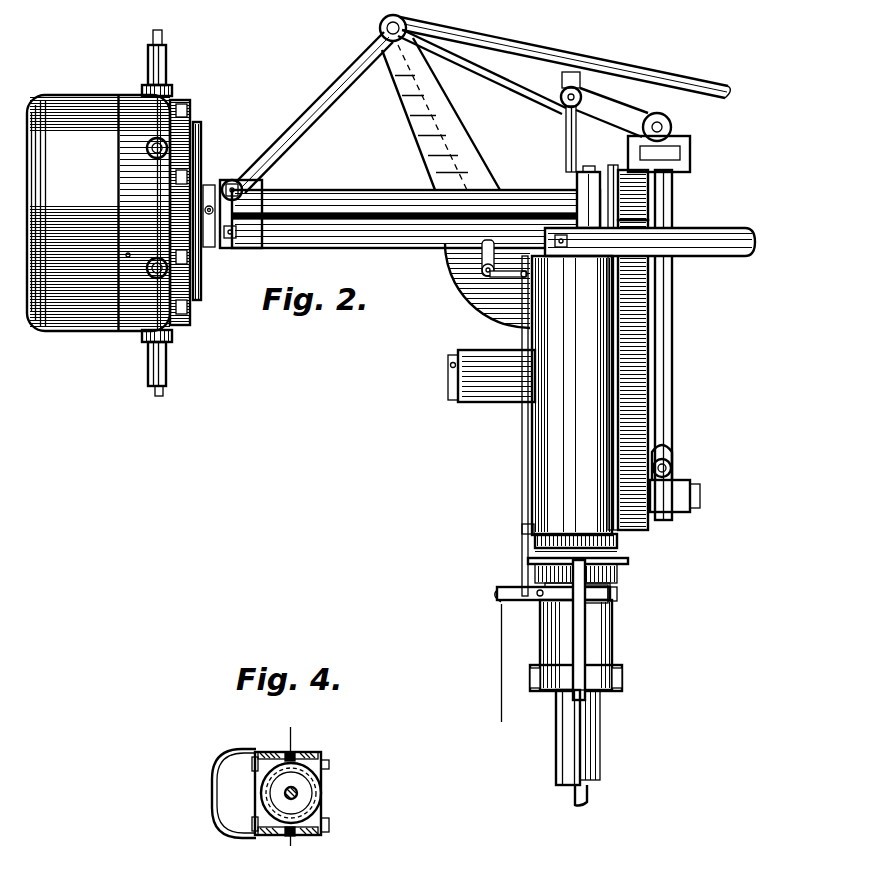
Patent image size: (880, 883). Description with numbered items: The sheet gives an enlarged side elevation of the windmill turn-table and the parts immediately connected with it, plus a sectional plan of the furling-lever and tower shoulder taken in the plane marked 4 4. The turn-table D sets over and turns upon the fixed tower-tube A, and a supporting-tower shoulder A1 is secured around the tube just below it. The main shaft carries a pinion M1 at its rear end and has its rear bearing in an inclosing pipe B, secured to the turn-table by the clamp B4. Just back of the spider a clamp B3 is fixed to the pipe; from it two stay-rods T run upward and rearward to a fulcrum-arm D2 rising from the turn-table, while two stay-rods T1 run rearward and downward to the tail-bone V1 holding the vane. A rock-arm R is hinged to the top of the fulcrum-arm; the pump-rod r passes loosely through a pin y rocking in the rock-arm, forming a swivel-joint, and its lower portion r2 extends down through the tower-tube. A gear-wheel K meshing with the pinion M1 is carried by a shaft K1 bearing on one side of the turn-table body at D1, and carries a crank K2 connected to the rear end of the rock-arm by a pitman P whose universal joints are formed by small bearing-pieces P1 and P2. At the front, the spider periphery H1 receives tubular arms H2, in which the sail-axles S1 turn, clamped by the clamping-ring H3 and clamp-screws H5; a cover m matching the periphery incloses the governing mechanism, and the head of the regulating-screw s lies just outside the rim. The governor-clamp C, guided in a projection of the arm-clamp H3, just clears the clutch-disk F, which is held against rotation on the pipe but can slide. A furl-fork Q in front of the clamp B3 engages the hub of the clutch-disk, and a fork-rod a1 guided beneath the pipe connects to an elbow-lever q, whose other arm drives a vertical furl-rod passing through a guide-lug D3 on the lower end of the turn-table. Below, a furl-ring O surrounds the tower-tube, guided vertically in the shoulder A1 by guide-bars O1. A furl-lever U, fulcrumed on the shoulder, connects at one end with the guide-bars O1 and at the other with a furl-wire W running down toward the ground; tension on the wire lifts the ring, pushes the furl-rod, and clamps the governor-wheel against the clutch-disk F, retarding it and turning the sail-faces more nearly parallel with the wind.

In FIG. 2, the cover m is at (108, 213).
In FIG. 2, the governor-clamp C is at (201, 150).
In FIG. 2, the sail-axle S1 is at (162, 33).
In FIG. 2, the tubular arm H2 is at (166, 55).
In FIG. 2, the clamping-ring H3 is at (172, 88).
In FIG. 2, the clamp-screws H5 is at (187, 175).
In FIG. 2, the spider periphery H1 is at (150, 215).
In FIG. 2, the regulating-screw s is at (130, 252).
In FIG. 2, the clamp B3 is at (240, 248).
In FIG. 2, the governor clutch-disk F is at (228, 180).
In FIG. 2, the furl-fork Q is at (212, 247).
In FIG. 2, the inclosing pipe B is at (310, 191).
In FIG. 2, the fork-rod a1 is at (315, 250).
In FIG. 2, the stay-rods T is at (300, 110).
In FIG. 2, the stay-rods T1 is at (560, 60).
In FIG. 2, the fulcrum-arm D2 is at (450, 148).
In FIG. 2, the rock-arm R is at (540, 90).
In FIG. 2, the pin y is at (566, 100).
In FIG. 2, the pump-rod r is at (566, 150).
In FIG. 4, the pump-rod r is at (297, 796).
In FIG. 2, the bearing-piece P2 is at (690, 155).
In FIG. 2, the clamp B4 is at (580, 182).
In FIG. 2, the pinion M1 is at (622, 180).
In FIG. 2, the gear-wheel K is at (640, 530).
In FIG. 2, the pitman P is at (672, 312).
In FIG. 2, the bearing-piece P1 is at (665, 502).
In FIG. 2, the crank K2 is at (700, 494).
In FIG. 2, the tail-bone V1 is at (720, 256).
In FIG. 2, the turn-table D is at (572, 395).
In FIG. 2, the furl-lever U is at (522, 458).
In FIG. 4, the furl-lever U is at (212, 806).
In FIG. 2, the elbow-lever q is at (470, 262).
In FIG. 2, the block D1 is at (498, 350).
In FIG. 2, the shaft K1 is at (448, 368).
In FIG. 2, the guide-lug D3 is at (522, 529).
In FIG. 2, the furl-ring O is at (535, 557).
In FIG. 2, the section plane 4 is at (535, 575).
In FIG. 2, the supporting-tower shoulder A1 is at (600, 625).
In FIG. 4, the supporting-tower shoulder A1 is at (312, 752).
In FIG. 2, the guide-bars O1 is at (573, 640).
In FIG. 4, the guide-bars O1 is at (290, 727).
In FIG. 2, the furl-wire W is at (501, 690).
In FIG. 2, the tower-tube A is at (578, 737).
In FIG. 4, the tower-tube A is at (312, 788).
In FIG. 2, the pump-rod r2 is at (575, 798).